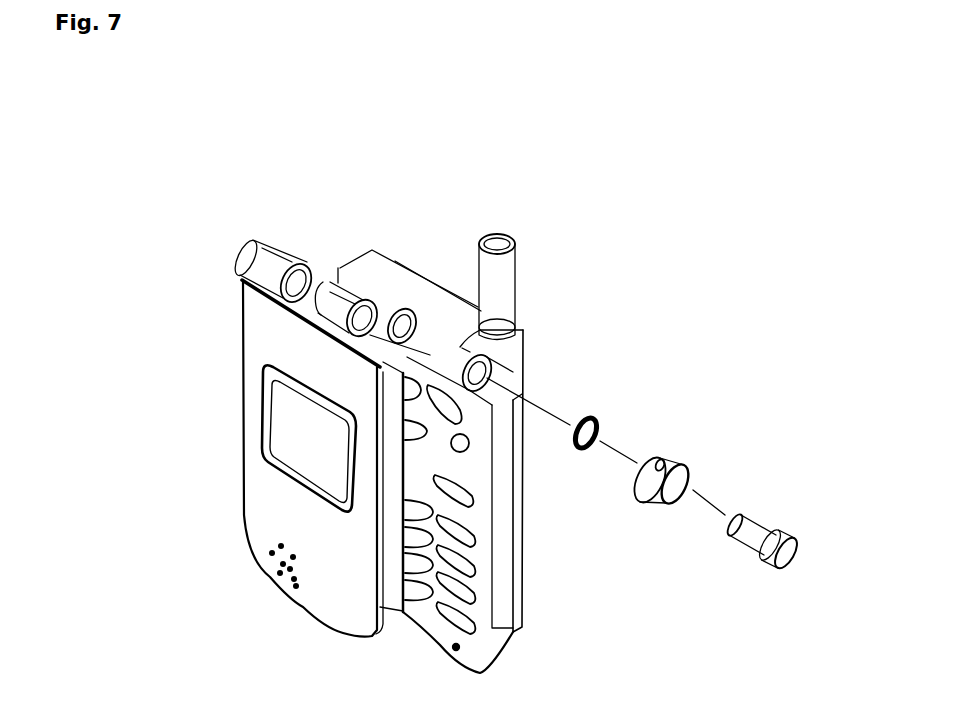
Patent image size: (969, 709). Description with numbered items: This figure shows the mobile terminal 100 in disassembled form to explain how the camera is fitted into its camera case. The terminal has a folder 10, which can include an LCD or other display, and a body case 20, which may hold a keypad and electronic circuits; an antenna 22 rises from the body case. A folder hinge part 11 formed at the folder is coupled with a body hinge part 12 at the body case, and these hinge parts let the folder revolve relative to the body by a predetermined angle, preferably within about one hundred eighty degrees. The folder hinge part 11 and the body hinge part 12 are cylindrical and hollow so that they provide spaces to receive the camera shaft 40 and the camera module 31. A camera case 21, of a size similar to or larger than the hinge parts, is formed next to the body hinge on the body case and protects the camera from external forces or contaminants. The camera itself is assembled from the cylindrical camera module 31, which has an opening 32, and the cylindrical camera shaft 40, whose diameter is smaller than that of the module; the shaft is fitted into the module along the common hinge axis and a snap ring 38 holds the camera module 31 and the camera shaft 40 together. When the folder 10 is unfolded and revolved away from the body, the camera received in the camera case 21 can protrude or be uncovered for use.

The mobile terminal 100 is at (715, 279).
The folder 10 is at (240, 432).
The folder hinge part 11 is at (341, 281).
The body hinge part 12 is at (388, 306).
The body case 20 is at (545, 609).
The camera case 21 is at (512, 319).
The antenna 22 is at (503, 233).
The camera module 31 is at (675, 505).
The sleeve hole 32 is at (662, 458).
The snap ring 38 is at (594, 412).
The camera shaft 40 is at (763, 518).